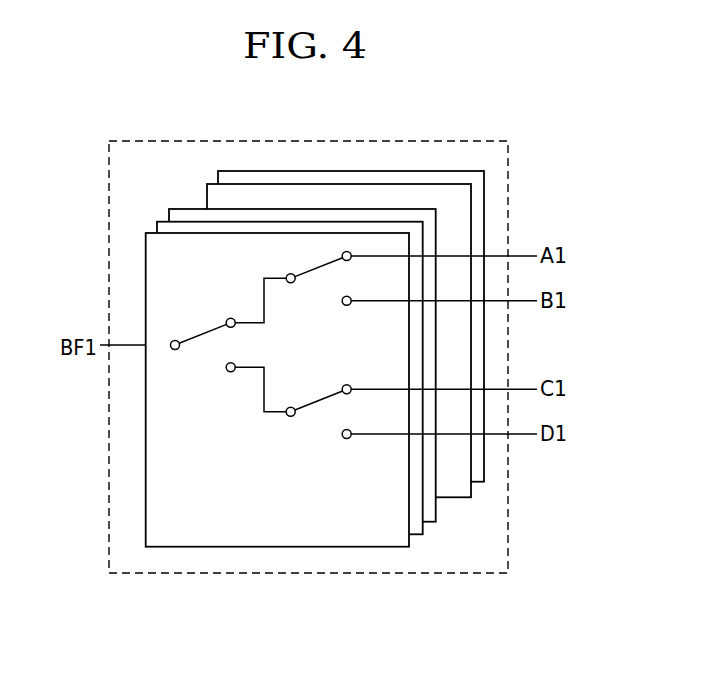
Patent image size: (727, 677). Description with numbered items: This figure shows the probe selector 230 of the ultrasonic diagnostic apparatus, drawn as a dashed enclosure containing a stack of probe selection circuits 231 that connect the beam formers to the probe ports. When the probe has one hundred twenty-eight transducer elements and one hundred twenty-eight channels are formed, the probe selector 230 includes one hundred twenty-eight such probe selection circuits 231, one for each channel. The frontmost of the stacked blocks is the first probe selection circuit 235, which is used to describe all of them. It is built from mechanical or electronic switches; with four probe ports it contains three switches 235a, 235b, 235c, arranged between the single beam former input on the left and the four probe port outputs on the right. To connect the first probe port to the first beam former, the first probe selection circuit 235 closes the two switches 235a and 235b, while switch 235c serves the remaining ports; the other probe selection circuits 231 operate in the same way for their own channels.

The probe selector 230 is at (403, 139).
The probe selection circuits 231 is at (214, 163).
The first probe selection circuit 235 is at (341, 547).
The switch 235a is at (202, 332).
The switch 235b is at (330, 267).
The switch 235c is at (322, 397).